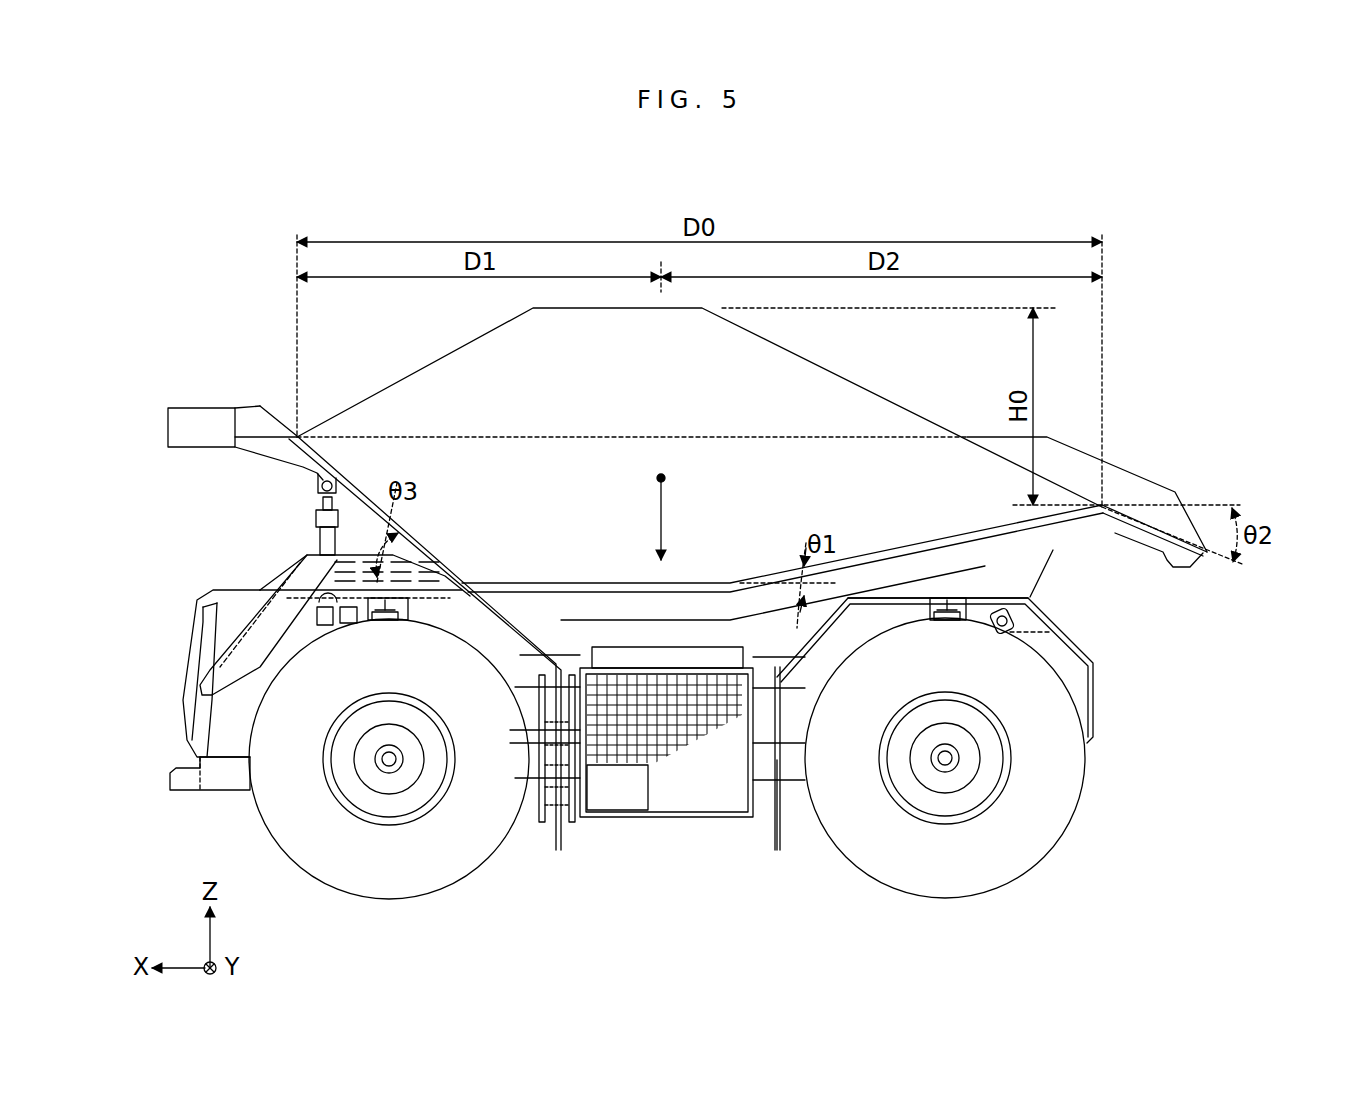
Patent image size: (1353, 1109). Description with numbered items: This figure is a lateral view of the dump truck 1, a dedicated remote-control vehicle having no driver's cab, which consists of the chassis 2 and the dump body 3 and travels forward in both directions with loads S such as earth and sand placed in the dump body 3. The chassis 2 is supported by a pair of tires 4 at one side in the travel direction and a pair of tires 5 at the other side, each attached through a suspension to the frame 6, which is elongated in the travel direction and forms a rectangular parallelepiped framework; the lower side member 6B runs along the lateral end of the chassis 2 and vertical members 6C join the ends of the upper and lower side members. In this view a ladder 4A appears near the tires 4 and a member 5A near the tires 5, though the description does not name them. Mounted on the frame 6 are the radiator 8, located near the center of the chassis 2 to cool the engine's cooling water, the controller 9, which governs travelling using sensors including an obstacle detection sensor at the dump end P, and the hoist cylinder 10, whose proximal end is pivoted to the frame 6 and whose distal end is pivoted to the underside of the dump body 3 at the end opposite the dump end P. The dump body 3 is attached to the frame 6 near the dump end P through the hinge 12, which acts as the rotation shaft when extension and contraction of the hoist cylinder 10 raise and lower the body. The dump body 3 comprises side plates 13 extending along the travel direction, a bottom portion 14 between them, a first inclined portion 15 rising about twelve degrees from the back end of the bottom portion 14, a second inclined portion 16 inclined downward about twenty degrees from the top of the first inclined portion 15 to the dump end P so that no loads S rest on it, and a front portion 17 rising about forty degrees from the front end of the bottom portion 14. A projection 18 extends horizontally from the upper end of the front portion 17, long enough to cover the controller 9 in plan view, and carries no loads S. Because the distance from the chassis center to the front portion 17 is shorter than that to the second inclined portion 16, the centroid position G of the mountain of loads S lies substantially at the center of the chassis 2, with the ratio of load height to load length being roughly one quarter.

The dump truck 1 is at (942, 205).
The chassis 2 is at (178, 770).
The dump body 3 is at (733, 607).
The tires 4 is at (455, 862).
The ladder 4A is at (558, 850).
The tires 5 is at (1015, 865).
The rear frame member 5A is at (779, 848).
The frame 6 is at (705, 721).
The lower side member 6B is at (770, 760).
The vertical member 6C is at (410, 616).
The radiator 8 is at (676, 800).
The controller 9 is at (230, 612).
The hoist cylinder 10 is at (326, 541).
The hinge 12 is at (998, 633).
The side plate 13 is at (728, 434).
The bottom portion 14 is at (682, 582).
The first inclined portion 15 is at (893, 560).
The second inclined portion 16 is at (1148, 520).
The front portion 17 is at (315, 498).
The projection 18 is at (198, 425).
The loads S is at (790, 366).
The centroid position G is at (661, 503).
The dump end P is at (1210, 556).